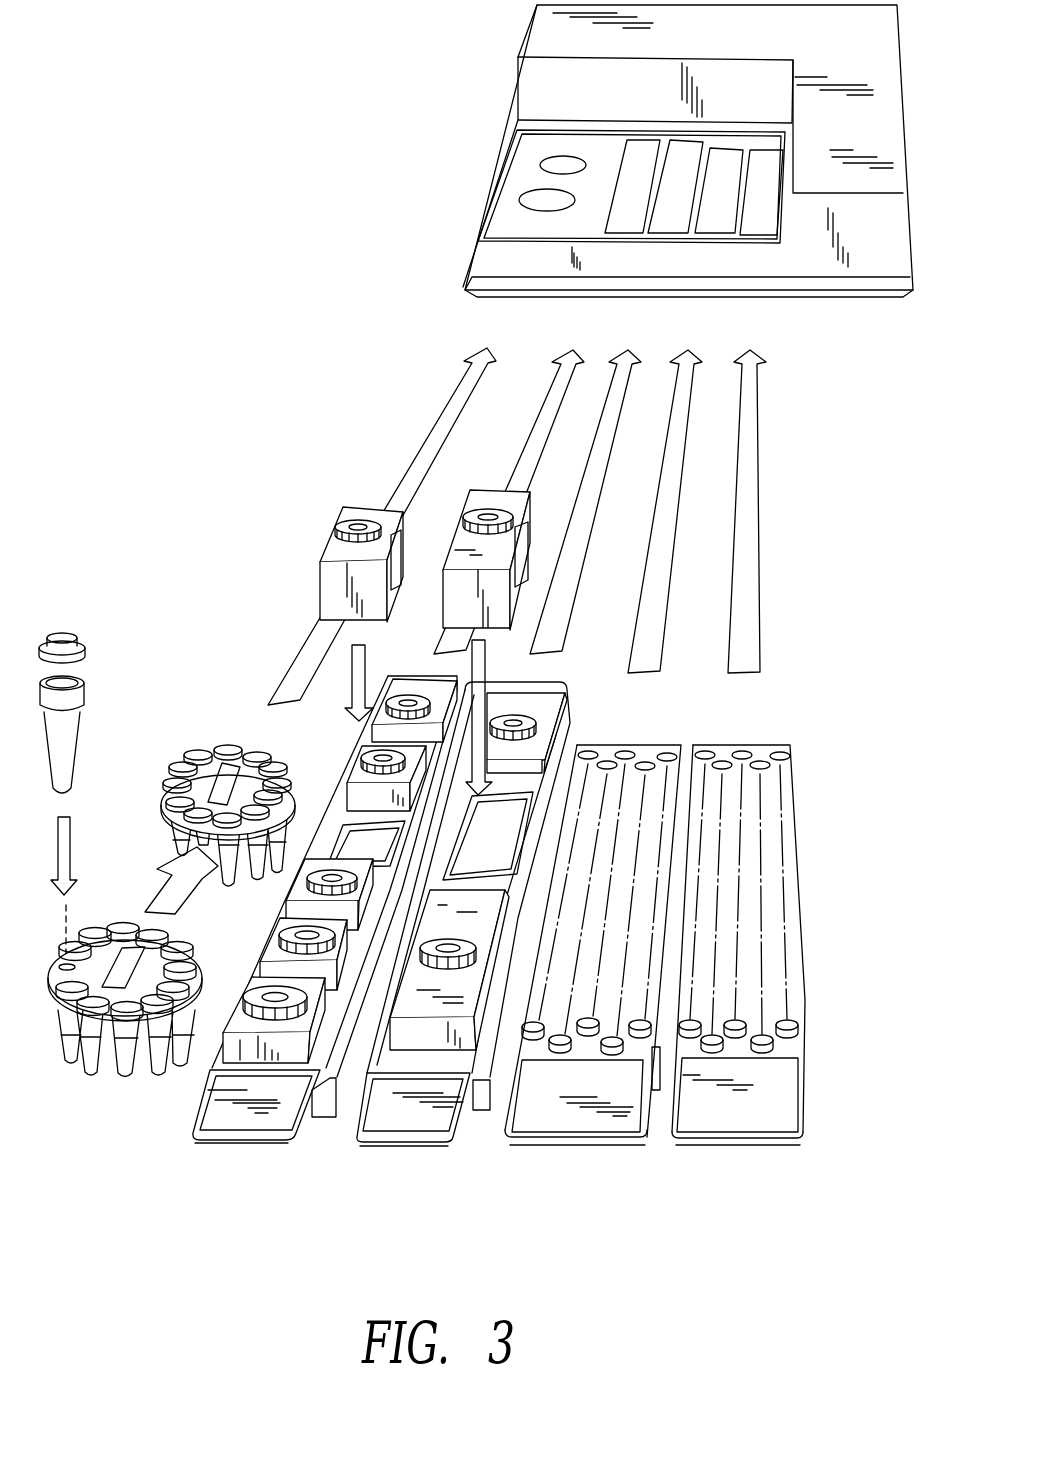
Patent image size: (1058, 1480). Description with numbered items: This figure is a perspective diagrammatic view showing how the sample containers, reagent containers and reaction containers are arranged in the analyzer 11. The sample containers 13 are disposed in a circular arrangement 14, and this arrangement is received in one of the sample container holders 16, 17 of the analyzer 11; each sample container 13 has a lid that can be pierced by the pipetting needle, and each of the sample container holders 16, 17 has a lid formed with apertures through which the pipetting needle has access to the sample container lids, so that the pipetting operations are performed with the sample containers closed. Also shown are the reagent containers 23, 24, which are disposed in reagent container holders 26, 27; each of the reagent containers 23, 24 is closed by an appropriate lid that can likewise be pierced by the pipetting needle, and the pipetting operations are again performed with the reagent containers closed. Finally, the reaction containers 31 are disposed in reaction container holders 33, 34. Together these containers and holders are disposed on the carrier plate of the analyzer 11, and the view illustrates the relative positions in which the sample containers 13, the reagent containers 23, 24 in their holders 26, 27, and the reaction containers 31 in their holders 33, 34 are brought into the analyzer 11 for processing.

The analyzer 11 is at (670, 151).
The sample container 13 is at (70, 718).
The circular arrangement 14 is at (222, 741).
The sample container holder 16 is at (519, 200).
The sample container holder 17 is at (540, 164).
The reagent container 23 is at (328, 578).
The reagent container 24 is at (485, 497).
The reagent container holder 26 is at (243, 1130).
The reagent container holder 27 is at (407, 1130).
The reaction container 31 is at (790, 1022).
The reaction container holder 33 is at (567, 1122).
The reaction container holder 34 is at (768, 967).